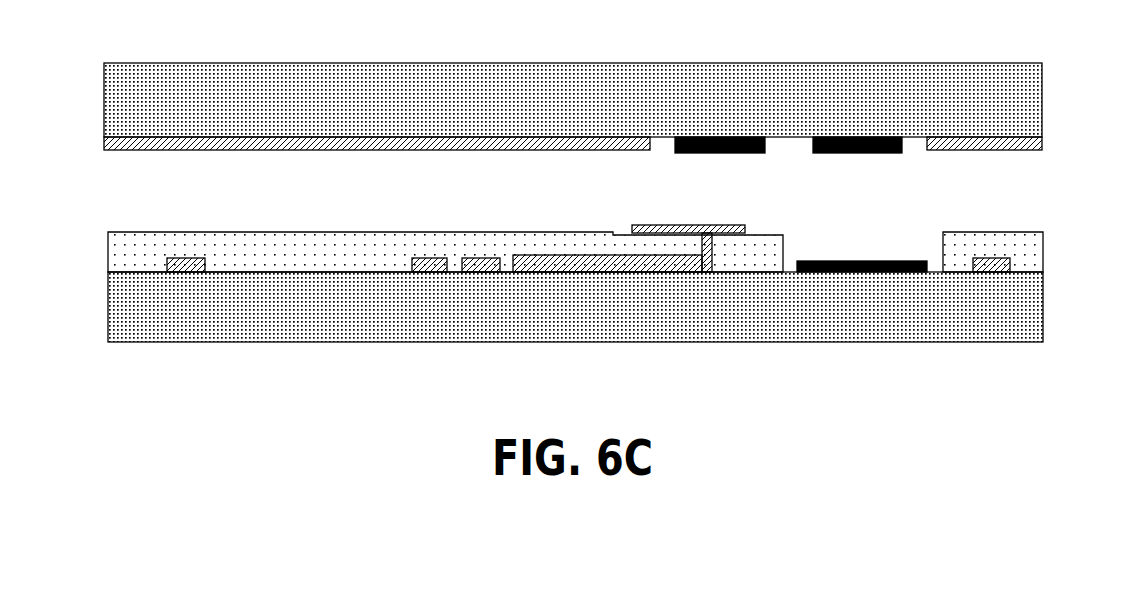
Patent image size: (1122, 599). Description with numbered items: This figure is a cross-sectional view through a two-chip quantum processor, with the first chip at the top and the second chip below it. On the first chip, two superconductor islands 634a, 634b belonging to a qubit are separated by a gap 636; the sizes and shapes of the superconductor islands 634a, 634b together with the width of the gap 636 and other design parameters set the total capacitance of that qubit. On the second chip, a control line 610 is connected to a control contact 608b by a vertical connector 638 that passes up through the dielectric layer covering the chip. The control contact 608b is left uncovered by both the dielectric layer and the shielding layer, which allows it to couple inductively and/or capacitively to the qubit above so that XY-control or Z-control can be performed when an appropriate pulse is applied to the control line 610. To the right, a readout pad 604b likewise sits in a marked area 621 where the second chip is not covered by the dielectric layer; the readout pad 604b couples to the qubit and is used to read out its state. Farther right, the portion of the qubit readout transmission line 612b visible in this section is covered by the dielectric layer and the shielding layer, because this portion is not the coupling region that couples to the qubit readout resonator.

The superconductor island 634a is at (675, 155).
The superconductor island 634b is at (880, 153).
The gap 636 is at (800, 143).
The control line 610 is at (527, 255).
The control contact 608b is at (655, 225).
The vertical connector 638 is at (712, 255).
The readout pad 604b is at (817, 260).
The qubit readout transmission line 612b is at (997, 230).
The marked area 621 is at (942, 353).